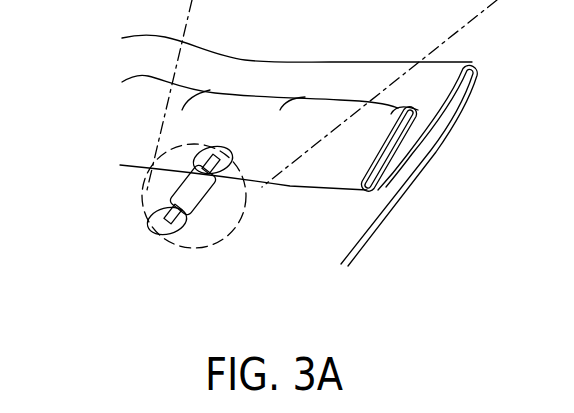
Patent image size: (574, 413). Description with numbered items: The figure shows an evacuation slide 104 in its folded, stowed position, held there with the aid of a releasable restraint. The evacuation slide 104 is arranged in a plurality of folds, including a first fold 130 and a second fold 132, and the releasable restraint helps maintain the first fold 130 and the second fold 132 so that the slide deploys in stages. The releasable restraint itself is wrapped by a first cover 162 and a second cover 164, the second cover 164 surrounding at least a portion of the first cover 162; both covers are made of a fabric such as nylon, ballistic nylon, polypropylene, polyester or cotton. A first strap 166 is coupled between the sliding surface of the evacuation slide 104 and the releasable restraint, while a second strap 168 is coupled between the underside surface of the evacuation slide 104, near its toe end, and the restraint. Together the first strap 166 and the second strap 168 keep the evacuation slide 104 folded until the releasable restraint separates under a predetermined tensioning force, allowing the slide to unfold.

The evacuation slide 104 is at (256, 128).
The first fold 130 is at (476, 64).
The second fold 132 is at (378, 192).
The first cover 162 is at (246, 225).
The second cover 164 is at (202, 191).
The first strap 166 is at (166, 209).
The second strap 168 is at (210, 168).